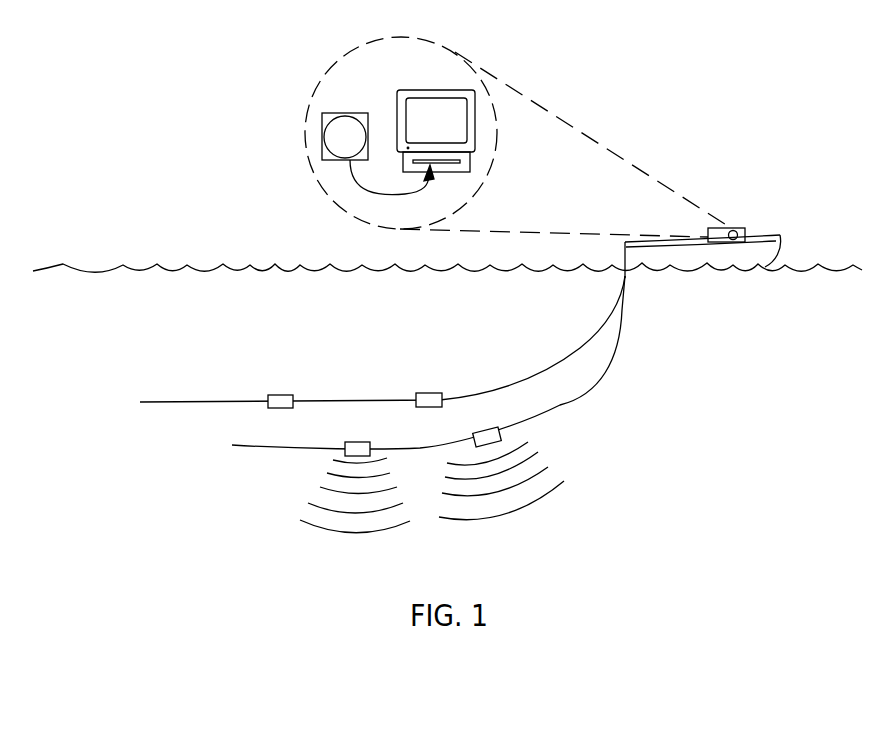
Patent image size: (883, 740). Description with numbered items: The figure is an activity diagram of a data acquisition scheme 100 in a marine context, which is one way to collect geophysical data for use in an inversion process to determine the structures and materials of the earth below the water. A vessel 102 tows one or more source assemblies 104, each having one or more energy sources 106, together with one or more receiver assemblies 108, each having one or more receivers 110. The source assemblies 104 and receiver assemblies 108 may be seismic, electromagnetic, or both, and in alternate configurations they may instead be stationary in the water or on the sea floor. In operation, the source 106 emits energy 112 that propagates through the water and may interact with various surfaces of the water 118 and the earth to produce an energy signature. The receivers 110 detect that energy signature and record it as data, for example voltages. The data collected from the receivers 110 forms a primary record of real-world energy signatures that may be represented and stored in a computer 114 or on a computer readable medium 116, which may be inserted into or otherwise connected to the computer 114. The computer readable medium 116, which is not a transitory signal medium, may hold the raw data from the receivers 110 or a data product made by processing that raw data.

The data acquisition scheme 100 is at (727, 105).
The vessel 102 is at (769, 230).
The source assembly 104 is at (610, 357).
The energy source 106 is at (355, 442).
The receiver assembly 108 is at (612, 318).
The receiver 110 is at (282, 395).
The energy 112 is at (558, 485).
The computer 114 is at (475, 110).
The computer readable medium 116 is at (338, 113).
The water 118 is at (806, 414).